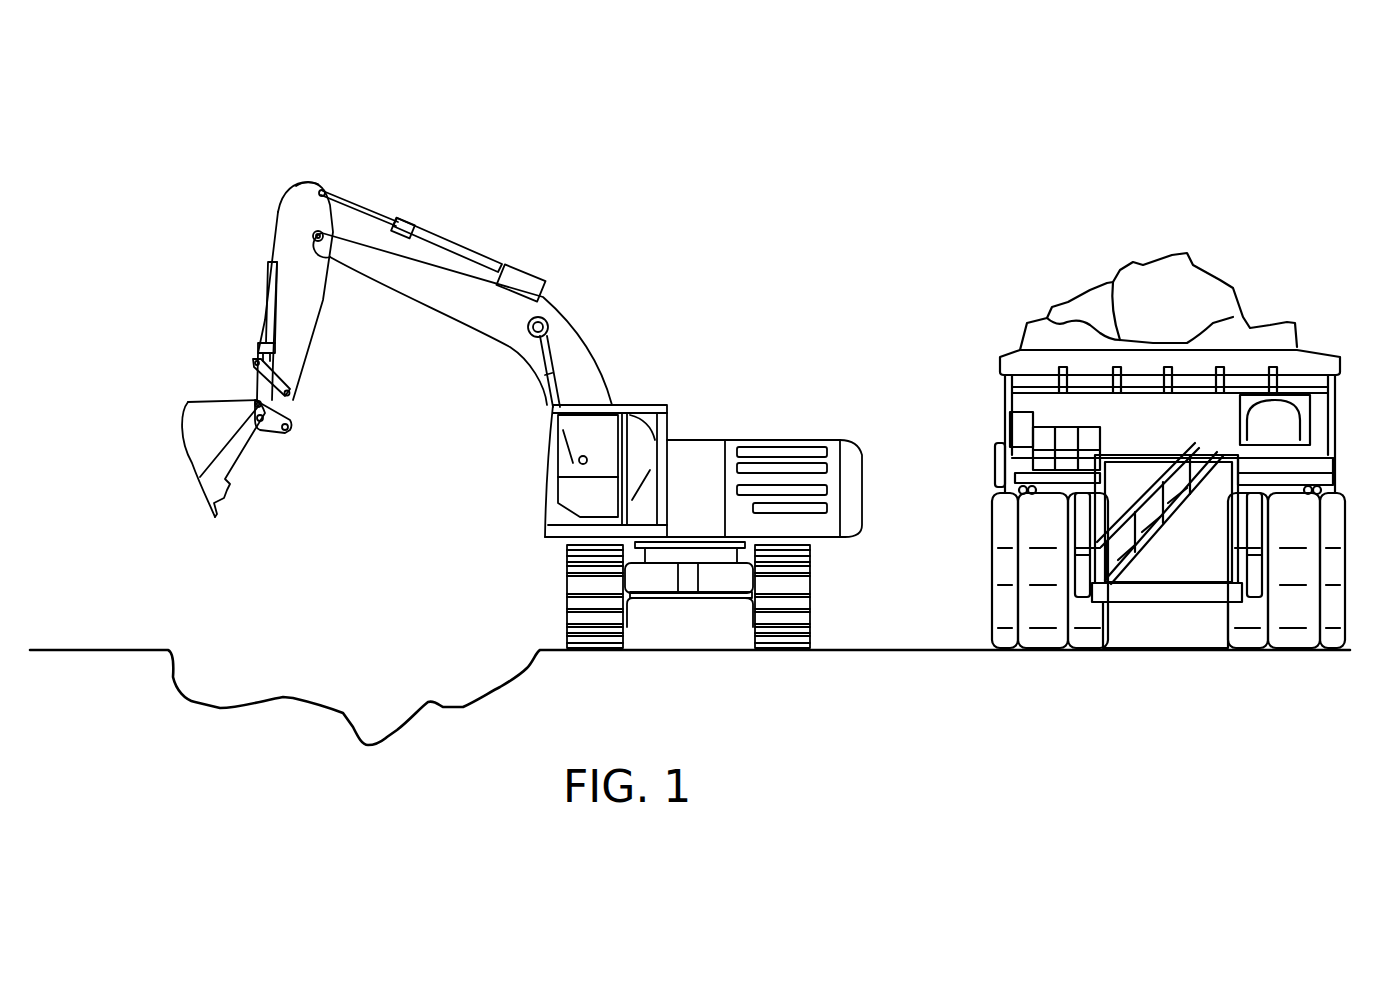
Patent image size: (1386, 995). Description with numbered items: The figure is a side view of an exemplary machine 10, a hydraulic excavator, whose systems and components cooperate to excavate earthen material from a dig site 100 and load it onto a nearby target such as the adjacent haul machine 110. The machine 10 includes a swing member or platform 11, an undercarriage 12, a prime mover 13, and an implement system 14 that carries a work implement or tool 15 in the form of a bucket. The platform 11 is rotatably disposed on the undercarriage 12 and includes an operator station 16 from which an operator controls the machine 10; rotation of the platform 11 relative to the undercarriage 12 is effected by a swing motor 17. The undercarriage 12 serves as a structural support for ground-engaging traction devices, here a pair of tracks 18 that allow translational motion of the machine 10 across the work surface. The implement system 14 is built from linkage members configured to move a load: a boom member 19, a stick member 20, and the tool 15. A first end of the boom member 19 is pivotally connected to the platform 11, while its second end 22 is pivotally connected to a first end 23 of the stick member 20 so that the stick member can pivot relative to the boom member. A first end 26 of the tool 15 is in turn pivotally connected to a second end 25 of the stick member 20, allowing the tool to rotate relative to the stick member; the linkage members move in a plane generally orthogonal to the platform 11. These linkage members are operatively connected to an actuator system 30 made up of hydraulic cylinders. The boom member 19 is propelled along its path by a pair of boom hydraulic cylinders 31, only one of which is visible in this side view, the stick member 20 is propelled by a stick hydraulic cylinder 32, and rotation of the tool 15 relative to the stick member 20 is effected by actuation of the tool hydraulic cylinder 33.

The machine 10 is at (637, 200).
The swing member or platform 11 is at (850, 445).
The undercarriage 12 is at (722, 588).
The prime mover 13 is at (793, 420).
The implement system 14 is at (513, 183).
The work implement or tool 15 is at (218, 425).
The operator station 16 is at (622, 405).
The swing motor 17 is at (722, 555).
The tracks 18 is at (592, 650).
The boom member 19 is at (471, 272).
The stick member 20 is at (279, 254).
The second end of boom member 22 is at (348, 242).
The first end of stick member 23 is at (314, 213).
The second end of stick member 25 is at (288, 405).
The first end of work implement or tool 26 is at (273, 430).
The actuator system 30 is at (560, 250).
The boom hydraulic cylinders 31 is at (548, 403).
The stick hydraulic cylinder 32 is at (440, 250).
The tool hydraulic cylinder 33 is at (268, 300).
The dig site 100 is at (190, 690).
The haul machine 110 is at (1270, 295).